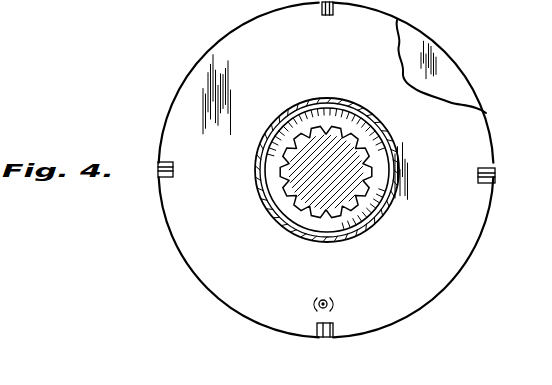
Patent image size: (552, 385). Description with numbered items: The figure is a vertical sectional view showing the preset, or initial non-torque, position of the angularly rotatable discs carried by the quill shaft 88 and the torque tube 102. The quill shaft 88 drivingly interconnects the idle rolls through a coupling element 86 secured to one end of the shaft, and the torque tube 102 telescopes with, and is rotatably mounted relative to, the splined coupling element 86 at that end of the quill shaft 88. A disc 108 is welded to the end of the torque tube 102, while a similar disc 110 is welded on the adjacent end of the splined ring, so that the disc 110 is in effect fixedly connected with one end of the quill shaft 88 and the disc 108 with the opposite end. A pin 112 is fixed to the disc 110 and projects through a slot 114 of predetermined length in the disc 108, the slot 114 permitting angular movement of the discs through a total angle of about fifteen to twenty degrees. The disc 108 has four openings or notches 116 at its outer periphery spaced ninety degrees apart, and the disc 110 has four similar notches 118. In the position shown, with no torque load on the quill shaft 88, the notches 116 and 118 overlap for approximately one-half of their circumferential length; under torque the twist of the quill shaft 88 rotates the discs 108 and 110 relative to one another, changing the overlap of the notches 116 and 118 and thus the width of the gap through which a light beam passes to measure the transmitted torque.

The coupling element 86 is at (274, 133).
The quill shaft 88 is at (306, 128).
The torque tube 102 is at (351, 104).
The disc 108 is at (488, 120).
The disc 110 is at (433, 56).
The pin 112 is at (323, 300).
The slot 114 is at (334, 303).
The notches 116 is at (334, 9).
The notches 118 is at (320, 12).